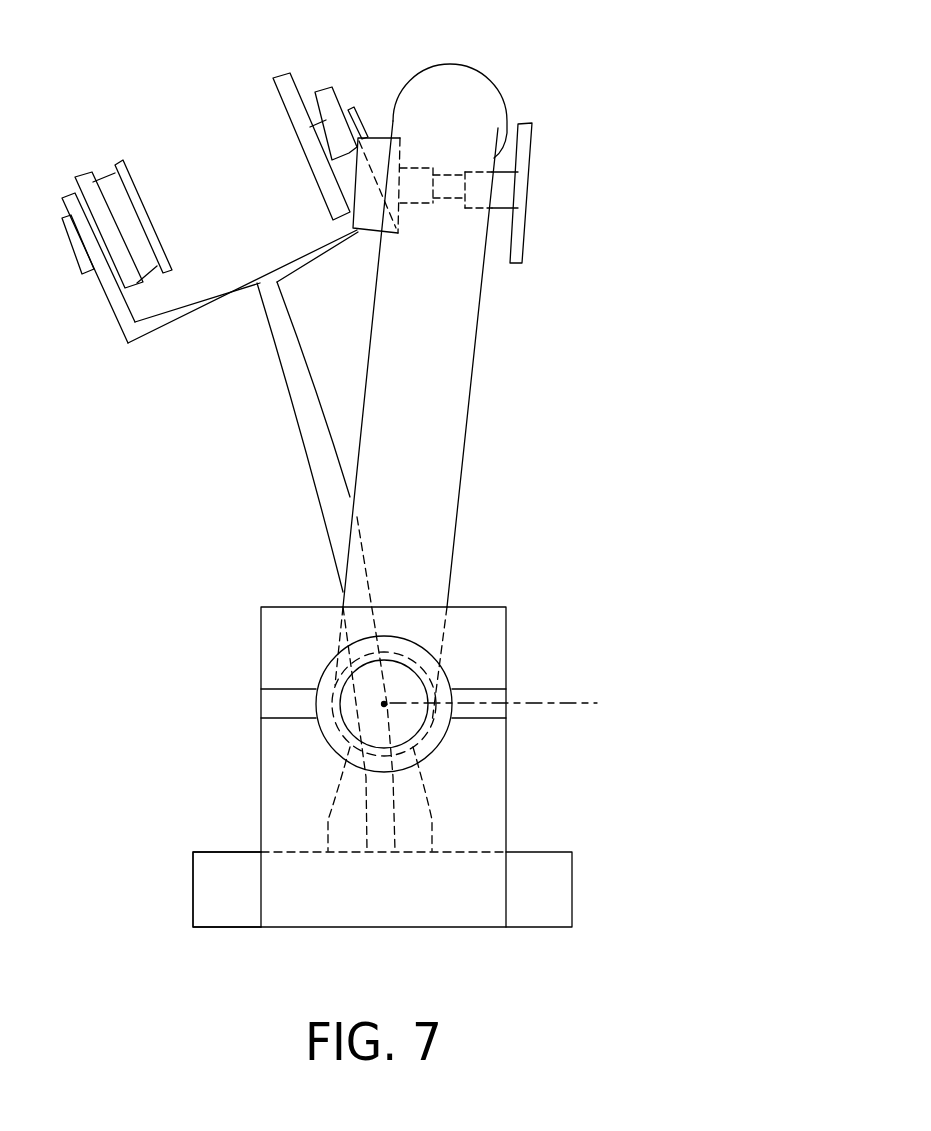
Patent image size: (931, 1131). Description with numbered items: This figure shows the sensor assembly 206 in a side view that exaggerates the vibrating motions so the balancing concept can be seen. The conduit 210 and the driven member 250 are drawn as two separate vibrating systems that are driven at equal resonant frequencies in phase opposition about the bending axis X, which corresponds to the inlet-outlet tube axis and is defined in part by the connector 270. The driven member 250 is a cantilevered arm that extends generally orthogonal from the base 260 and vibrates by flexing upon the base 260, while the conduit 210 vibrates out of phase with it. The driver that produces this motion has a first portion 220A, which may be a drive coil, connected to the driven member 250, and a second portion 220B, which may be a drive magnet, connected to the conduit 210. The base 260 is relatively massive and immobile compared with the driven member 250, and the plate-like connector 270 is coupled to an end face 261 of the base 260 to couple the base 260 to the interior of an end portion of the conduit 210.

The sensor assembly 206 is at (683, 207).
The conduit 210 is at (463, 317).
The first portion 220A is at (111, 177).
The second portion 220B is at (378, 137).
The driven member 250 is at (257, 285).
The connector 270 is at (280, 638).
The base 260 is at (192, 891).
The end face 261 is at (227, 902).